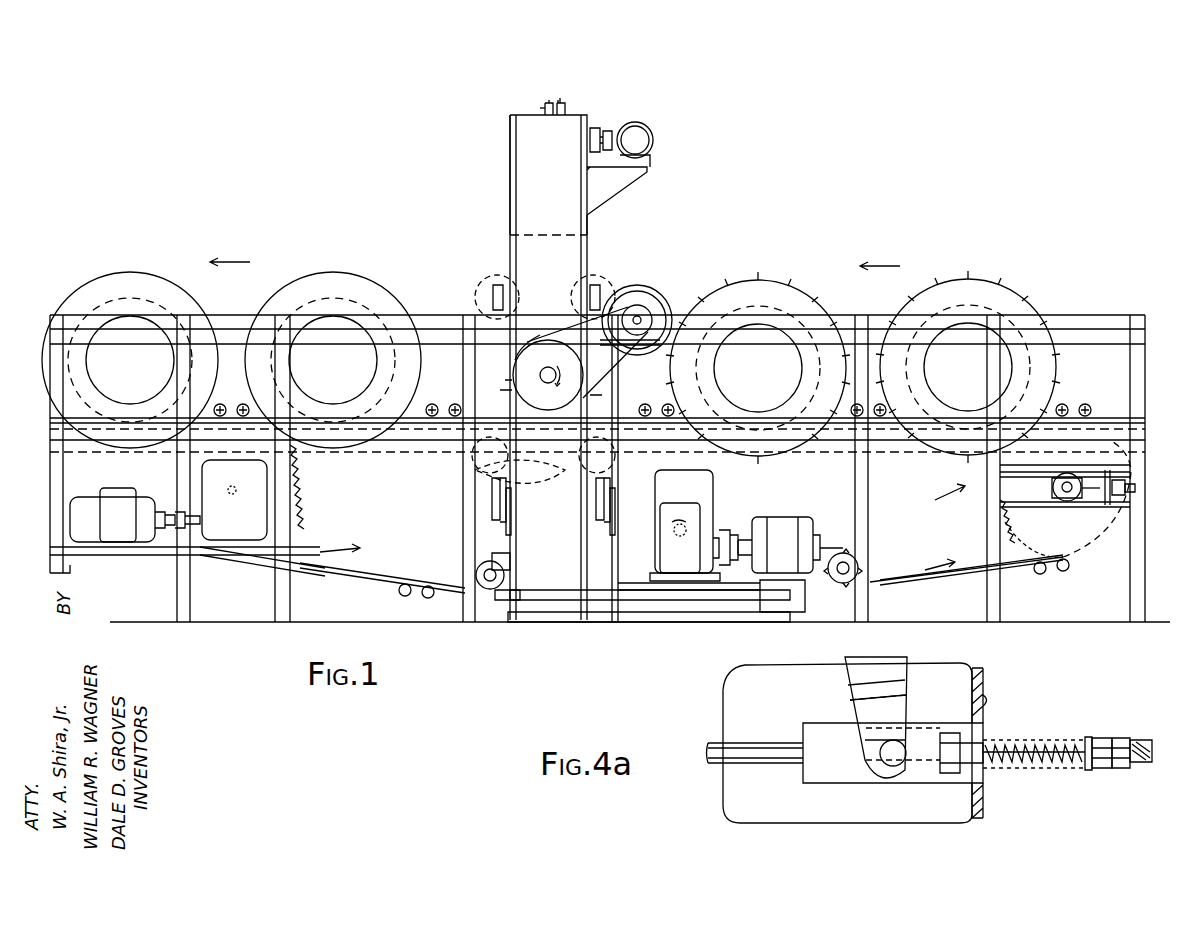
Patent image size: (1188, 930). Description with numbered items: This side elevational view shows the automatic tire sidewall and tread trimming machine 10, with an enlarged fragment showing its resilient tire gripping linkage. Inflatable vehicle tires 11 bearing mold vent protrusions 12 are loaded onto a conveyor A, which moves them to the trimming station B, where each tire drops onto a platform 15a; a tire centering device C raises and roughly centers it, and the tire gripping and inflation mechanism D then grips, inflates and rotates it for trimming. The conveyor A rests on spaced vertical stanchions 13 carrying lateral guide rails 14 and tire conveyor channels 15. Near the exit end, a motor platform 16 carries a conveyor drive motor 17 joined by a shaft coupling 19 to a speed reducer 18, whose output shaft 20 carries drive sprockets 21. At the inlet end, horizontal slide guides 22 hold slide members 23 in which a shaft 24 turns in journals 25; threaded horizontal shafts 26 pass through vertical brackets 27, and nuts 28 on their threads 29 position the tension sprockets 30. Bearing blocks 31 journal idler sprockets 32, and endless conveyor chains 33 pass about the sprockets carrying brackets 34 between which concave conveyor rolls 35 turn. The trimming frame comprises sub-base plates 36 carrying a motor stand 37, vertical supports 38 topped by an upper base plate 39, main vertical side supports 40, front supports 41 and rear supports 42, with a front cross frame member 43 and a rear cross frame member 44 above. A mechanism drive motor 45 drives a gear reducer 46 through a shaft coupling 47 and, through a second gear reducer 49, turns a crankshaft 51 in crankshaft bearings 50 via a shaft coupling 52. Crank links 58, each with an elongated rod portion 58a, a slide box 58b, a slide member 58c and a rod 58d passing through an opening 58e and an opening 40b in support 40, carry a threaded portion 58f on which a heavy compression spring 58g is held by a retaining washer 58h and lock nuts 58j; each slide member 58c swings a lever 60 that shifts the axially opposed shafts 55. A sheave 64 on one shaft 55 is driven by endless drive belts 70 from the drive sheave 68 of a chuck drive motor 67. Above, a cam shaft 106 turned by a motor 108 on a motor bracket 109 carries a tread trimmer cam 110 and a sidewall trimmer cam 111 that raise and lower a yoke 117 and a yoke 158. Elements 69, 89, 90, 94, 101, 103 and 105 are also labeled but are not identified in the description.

In FIG. 1, the automatic tire sidewall and tread trimming machine 10 is at (728, 246).
In FIG. 1, the inflatable vehicle tire 11 is at (110, 276).
In FIG. 1, the mold vent protrusions 12 is at (752, 280).
In FIG. 1, the vertical stanchions 13 is at (1145, 390).
In FIG. 1, the lateral guide rails 14 is at (250, 315).
In FIG. 1, the tire conveyor channels 15 is at (390, 460).
In FIG. 1, the platform 15a is at (560, 474).
In FIG. 1, the motor platform 16 is at (125, 556).
In FIG. 1, the conveyor drive motor 17 is at (120, 490).
In FIG. 1, the speed reducer 18 is at (240, 523).
In FIG. 1, the shaft coupling 19 is at (175, 556).
In FIG. 1, the output shaft 20 is at (234, 486).
In FIG. 1, the drive sprockets 21 is at (298, 495).
In FIG. 1, the horizontal slide guides 22 is at (1078, 472).
In FIG. 1, the slide members 23 is at (1058, 498).
In FIG. 1, the shaft 24 is at (1052, 488).
In FIG. 1, the journals 25 is at (1050, 508).
In FIG. 1, the threaded horizontal shafts 26 is at (1095, 495).
In FIG. 1, the vertical brackets 27 is at (1110, 470).
In FIG. 1, the nuts 28 is at (1125, 480).
In FIG. 1, the threads 29 is at (1135, 488).
In FIG. 1, the tension sprockets 30 is at (1020, 535).
In FIG. 1, the bearing blocks 31 is at (476, 575).
In FIG. 1, the idler sprockets 32 is at (490, 556).
In FIG. 1, the endless conveyor chains 33 is at (905, 570).
In FIG. 1, the brackets 34 is at (400, 592).
In FIG. 1, the concave conveyor rolls 35 is at (243, 404).
In FIG. 1, the sub-base plates 36 is at (575, 618).
In FIG. 1, the motor stand 37 is at (805, 610).
In FIG. 1, the vertical supports 38 is at (700, 586).
In FIG. 1, the upper base plate 39 is at (575, 600).
In FIG. 1, the main vertical side supports 40 is at (556, 253).
In FIG. 4a, the main vertical side supports 40 is at (983, 678).
In FIG. 4a, the opening 40b is at (985, 712).
In FIG. 1, the main vertical front supports 41 is at (587, 235).
In FIG. 4a, the main vertical front supports 41 is at (795, 806).
In FIG. 1, the main vertical rear supports 42 is at (510, 235).
In FIG. 1, the front cross frame member 43 is at (597, 128).
In FIG. 1, the rear cross frame member 44 is at (510, 140).
In FIG. 1, the mechanism drive motor 45 is at (785, 517).
In FIG. 1, the gear reducer 46 is at (705, 503).
In FIG. 1, the shaft coupling 47 is at (722, 530).
In FIG. 1, the second gear reducer 49 is at (713, 480).
In FIG. 1, the crankshaft bearings 50 is at (500, 510).
In FIG. 1, the crankshaft 51 is at (490, 500).
In FIG. 1, the shaft coupling 52 is at (640, 483).
In FIG. 1, the axially opposed shafts 55 is at (549, 368).
In FIG. 4a, the crank links 58 is at (711, 792).
In FIG. 4a, the elongated rod portion 58a is at (730, 745).
In FIG. 4a, the slide box 58b is at (815, 722).
In FIG. 4a, the slide member 58c is at (910, 770).
In FIG. 4a, the rod 58d is at (975, 770).
In FIG. 4a, the opening 58e is at (995, 740).
In FIG. 4a, the threaded portion 58f is at (1130, 782).
In FIG. 4a, the heavy compression spring 58g is at (1098, 768).
In FIG. 4a, the retaining washer 58h is at (1088, 737).
In FIG. 4a, the lock nuts 58j is at (1140, 740).
In FIG. 4a, the lever 60 is at (880, 665).
In FIG. 1, the sheave 64 is at (548, 400).
In FIG. 1, the chuck drive motor 67 is at (625, 290).
In FIG. 1, the drive sheave 68 is at (640, 297).
In FIG. 1, the pulley 69 is at (650, 312).
In FIG. 1, the endless drive belts 70 is at (678, 362).
In FIG. 1, the guide rail 89 is at (600, 305).
In FIG. 1, the guide rail 90 is at (500, 395).
In FIG. 1, the guard 94 is at (485, 285).
In FIG. 1, the roller 101 is at (485, 462).
In FIG. 1, the bracket 103 is at (500, 600).
In FIG. 1, the slide bar 105 is at (505, 530).
In FIG. 1, the cam shaft 106 is at (612, 131).
In FIG. 1, the motor 108 is at (653, 140).
In FIG. 1, the motor bracket 109 is at (625, 178).
In FIG. 1, the tread trimmer cam 110 is at (549, 100).
In FIG. 1, the sidewall trimmer cam 111 is at (560, 100).
In FIG. 1, the yoke 117 is at (540, 106).
In FIG. 1, the yoke 158 is at (562, 98).
In FIG. 1, the conveyor A is at (950, 508).
In FIG. 1, the trimming station B is at (490, 200).
In FIG. 1, the tire centering device C is at (485, 267).
In FIG. 1, the tire gripping and inflation mechanism D is at (535, 330).